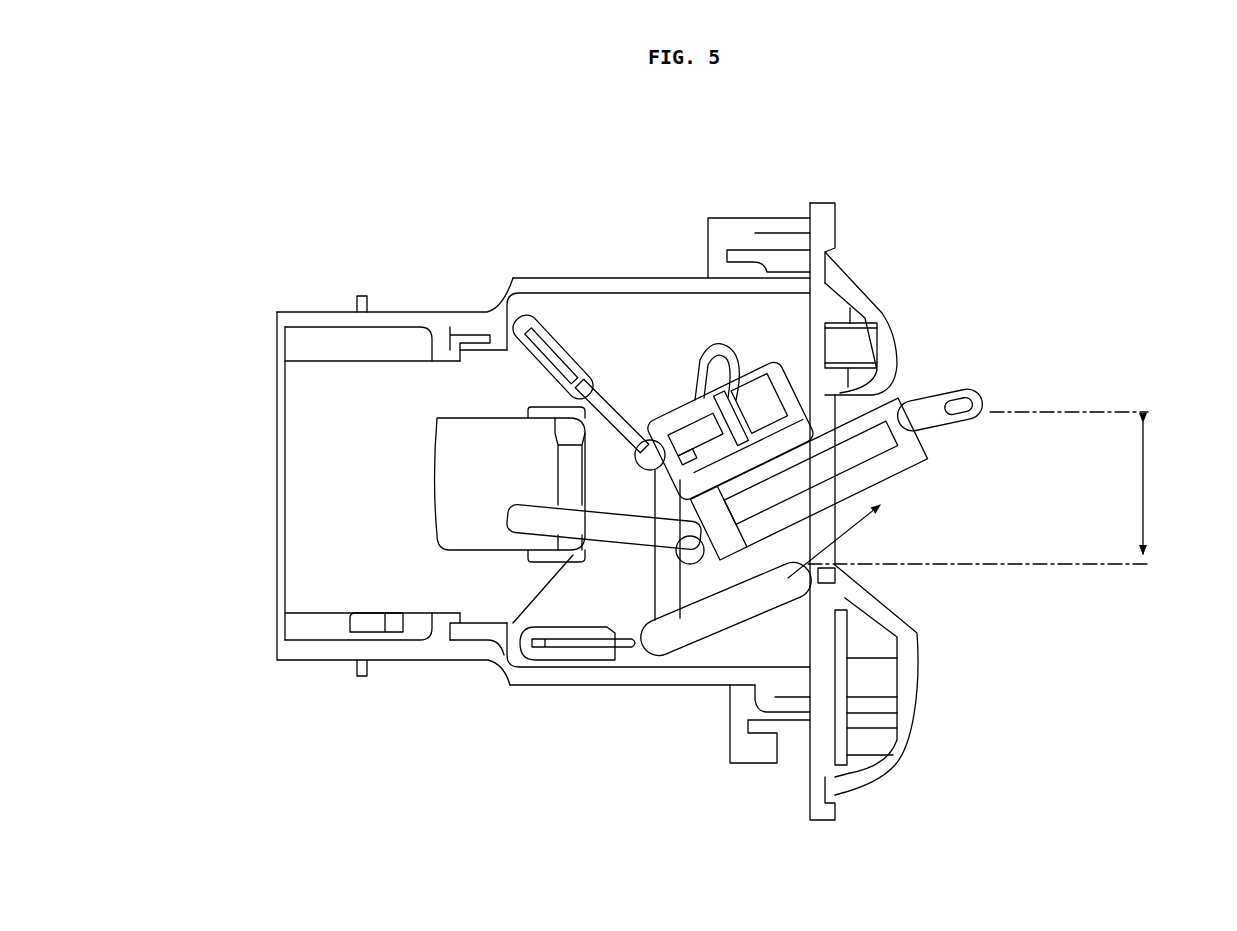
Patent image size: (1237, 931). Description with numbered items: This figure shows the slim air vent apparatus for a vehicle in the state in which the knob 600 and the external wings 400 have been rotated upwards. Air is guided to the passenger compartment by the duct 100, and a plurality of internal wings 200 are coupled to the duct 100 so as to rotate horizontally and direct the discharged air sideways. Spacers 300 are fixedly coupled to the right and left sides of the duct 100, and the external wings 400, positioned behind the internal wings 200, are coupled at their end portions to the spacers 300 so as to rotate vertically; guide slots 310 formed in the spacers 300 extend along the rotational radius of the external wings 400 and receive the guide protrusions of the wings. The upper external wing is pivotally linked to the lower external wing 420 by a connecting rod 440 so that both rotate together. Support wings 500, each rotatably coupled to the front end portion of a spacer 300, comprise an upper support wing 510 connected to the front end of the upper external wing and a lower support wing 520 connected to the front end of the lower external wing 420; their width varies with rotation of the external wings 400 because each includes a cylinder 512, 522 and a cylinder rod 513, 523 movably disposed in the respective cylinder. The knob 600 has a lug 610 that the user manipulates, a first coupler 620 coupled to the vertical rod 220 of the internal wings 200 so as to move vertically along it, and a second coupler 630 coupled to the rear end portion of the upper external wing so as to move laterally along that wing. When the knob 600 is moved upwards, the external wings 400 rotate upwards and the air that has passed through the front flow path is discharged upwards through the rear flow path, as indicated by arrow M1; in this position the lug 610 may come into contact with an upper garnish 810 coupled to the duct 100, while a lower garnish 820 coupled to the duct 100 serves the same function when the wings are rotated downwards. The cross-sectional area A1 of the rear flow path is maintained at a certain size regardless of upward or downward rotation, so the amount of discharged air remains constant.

The duct 100 is at (320, 318).
The internal wings 200 is at (328, 441).
The vertical rod 220 is at (570, 475).
The spacers 300 is at (652, 327).
The guide slots 310 is at (693, 358).
The external wings 400 is at (800, 617).
The lower external wing 420 is at (735, 600).
The connecting rod 440 is at (672, 585).
The support wings 500 is at (521, 307).
The upper support wing 510 is at (610, 162).
The cylinder 512 is at (550, 357).
The cylinder rod 513 is at (617, 403).
The lower support wing 520 is at (612, 762).
The cylinder 522 is at (538, 645).
The cylinder rod 523 is at (605, 645).
The knob 600 is at (985, 385).
The lug 610 is at (947, 400).
The first coupler 620 is at (620, 535).
The second coupler 630 is at (763, 363).
The upper garnish 810 is at (873, 313).
The lower garnish 820 is at (903, 725).
The arrow indicating upward air discharge M1 is at (859, 534).
The cross-sectional area of the rear flow path A1 is at (991, 488).